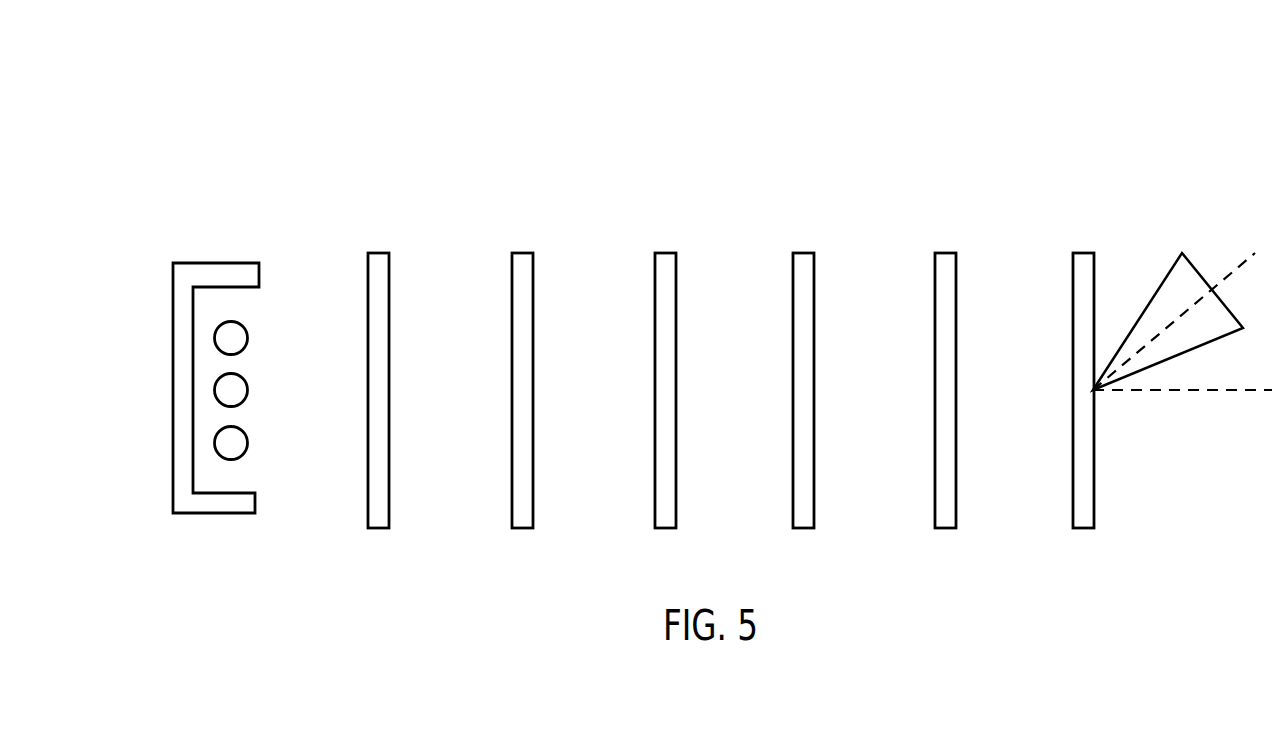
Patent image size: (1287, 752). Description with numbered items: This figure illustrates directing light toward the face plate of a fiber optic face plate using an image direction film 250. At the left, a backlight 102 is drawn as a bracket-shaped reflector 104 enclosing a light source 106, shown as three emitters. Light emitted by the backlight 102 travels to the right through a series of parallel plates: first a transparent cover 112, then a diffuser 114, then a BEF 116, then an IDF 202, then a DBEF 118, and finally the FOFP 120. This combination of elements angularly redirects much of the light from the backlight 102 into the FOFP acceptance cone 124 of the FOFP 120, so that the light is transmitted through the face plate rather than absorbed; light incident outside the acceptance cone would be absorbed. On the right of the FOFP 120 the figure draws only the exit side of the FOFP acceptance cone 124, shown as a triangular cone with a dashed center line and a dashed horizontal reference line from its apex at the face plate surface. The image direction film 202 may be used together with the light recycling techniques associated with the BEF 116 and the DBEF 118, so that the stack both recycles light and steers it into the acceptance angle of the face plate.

The image direction film 250 is at (498, 96).
The backlight 102 is at (249, 547).
The reflector 104 is at (203, 272).
The light source 106 is at (238, 440).
The transparent cover 112 is at (372, 276).
The diffuser 114 is at (515, 276).
The BEF 116 is at (659, 276).
The IDF 202 is at (795, 276).
The DBEF 118 is at (939, 276).
The FOFP 120 is at (1076, 276).
The FOFP acceptance cone 124 is at (1165, 285).